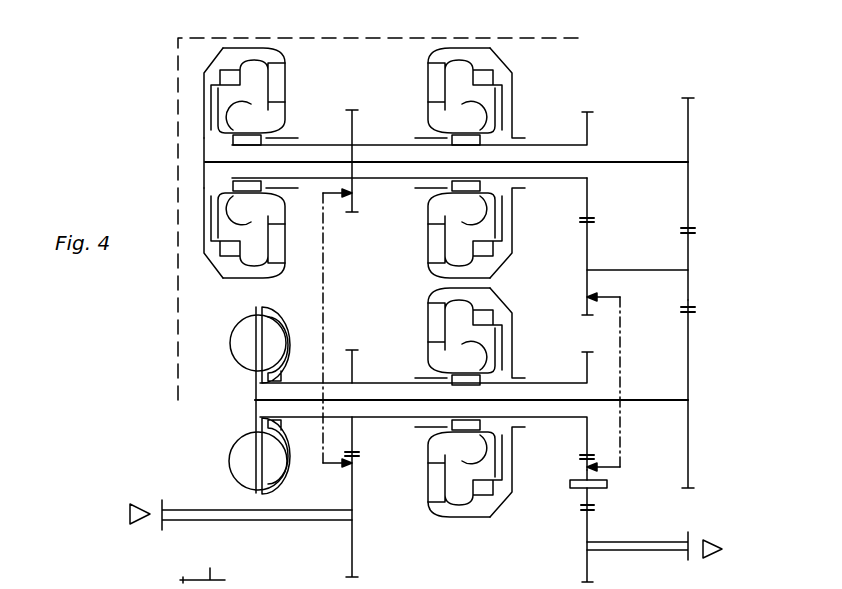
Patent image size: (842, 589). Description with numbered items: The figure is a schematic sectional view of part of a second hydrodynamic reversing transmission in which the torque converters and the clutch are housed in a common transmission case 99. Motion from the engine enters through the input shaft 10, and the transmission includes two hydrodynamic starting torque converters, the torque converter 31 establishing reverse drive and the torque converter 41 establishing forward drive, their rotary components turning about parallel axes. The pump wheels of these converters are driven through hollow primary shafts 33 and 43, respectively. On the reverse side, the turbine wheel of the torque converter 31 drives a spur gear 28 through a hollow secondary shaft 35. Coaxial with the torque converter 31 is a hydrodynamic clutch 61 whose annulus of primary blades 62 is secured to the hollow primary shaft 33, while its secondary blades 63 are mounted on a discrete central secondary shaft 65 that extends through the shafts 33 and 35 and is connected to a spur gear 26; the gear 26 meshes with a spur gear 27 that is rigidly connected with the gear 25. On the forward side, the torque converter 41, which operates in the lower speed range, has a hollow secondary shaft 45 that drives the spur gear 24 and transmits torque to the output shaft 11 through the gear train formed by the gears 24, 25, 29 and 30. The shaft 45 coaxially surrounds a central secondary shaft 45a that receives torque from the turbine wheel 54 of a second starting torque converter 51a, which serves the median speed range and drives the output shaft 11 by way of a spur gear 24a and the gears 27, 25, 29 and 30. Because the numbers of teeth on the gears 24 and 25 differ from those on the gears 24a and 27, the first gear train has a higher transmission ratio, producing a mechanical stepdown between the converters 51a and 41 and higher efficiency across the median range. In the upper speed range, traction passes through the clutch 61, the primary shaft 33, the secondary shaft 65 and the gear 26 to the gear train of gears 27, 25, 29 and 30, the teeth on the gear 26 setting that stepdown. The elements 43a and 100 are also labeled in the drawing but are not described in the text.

The input shaft 10 is at (298, 520).
The output shaft 11 is at (657, 553).
The spur gear 24 is at (588, 128).
The spur gear 24a is at (690, 130).
The gear 25 is at (590, 240).
The spur gear 26 is at (690, 355).
The spur gear 27 is at (692, 252).
The spur gear 28 is at (588, 427).
The gear 29 is at (627, 487).
The gear 30 is at (587, 530).
The hydrodynamic starting torque converter 31 is at (469, 538).
The hollow primary shaft 33 is at (391, 383).
The hollow secondary shaft 35 is at (554, 383).
The hydrodynamic starting torque converter 41 is at (522, 106).
The hollow primary shaft 43 is at (386, 145).
The gear 43a is at (252, 389).
The secondary shaft 45 is at (546, 180).
The central secondary shaft 45a is at (634, 160).
The second starting torque converter 51a is at (300, 108).
The turbine wheel 54 is at (204, 73).
The hydrodynamic clutch 61 is at (222, 453).
The primary blades 62 is at (116, 579).
The secondary blades 63 is at (73, 579).
The secondary shaft 65 is at (651, 398).
The common transmission case 99 is at (178, 328).
The gear 100 is at (210, 572).